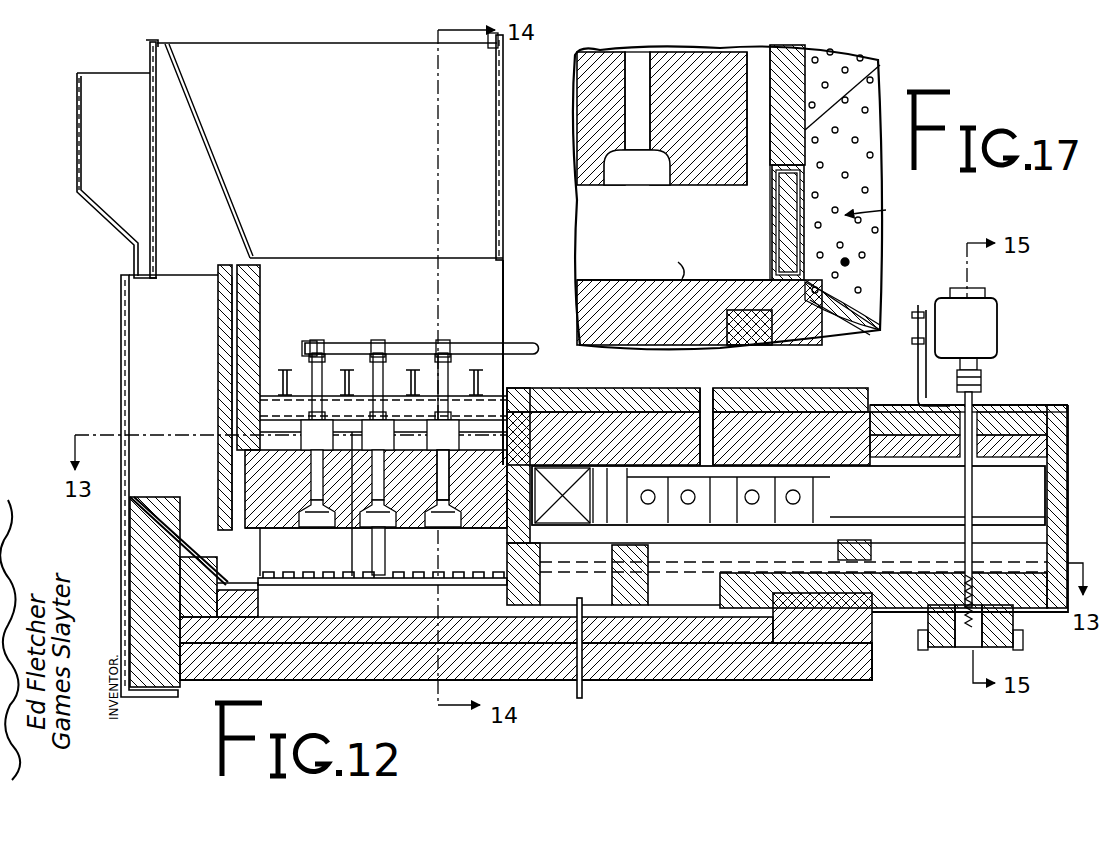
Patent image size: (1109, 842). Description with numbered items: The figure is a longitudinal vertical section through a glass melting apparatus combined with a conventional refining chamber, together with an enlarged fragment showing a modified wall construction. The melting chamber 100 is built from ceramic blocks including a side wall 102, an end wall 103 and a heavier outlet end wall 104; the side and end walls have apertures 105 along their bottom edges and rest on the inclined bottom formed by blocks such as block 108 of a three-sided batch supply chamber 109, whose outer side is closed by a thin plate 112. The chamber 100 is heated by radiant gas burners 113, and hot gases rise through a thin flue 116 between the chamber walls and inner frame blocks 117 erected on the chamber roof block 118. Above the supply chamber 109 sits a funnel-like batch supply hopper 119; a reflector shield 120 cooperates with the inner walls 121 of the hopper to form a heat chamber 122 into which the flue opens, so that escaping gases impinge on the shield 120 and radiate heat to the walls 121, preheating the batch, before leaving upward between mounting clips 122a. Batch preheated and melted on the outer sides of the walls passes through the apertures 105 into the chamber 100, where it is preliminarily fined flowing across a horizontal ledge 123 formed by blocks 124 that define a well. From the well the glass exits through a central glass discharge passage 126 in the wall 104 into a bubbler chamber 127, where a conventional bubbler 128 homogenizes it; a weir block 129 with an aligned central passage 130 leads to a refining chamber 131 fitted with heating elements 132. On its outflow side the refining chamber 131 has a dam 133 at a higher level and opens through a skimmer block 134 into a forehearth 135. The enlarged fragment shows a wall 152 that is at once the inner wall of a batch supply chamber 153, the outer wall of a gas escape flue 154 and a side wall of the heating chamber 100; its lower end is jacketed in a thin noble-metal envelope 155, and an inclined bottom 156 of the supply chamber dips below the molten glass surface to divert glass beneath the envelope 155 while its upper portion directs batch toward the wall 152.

In FIG. 12, the melting chamber 100 is at (270, 546).
In FIG. 17, the melting chamber 100 is at (650, 229).
In FIG. 12, the side wall 102 is at (324, 556).
In FIG. 12, the end wall 103 is at (218, 474).
In FIG. 12, the outlet end wall 104 is at (507, 597).
In FIG. 12, the apertures 105 is at (456, 578).
In FIG. 12, the block 108 is at (180, 548).
In FIG. 12, the batch supply chamber 109 is at (176, 375).
In FIG. 12, the thin plate 112 is at (129, 356).
In FIG. 12, the radiant gas burners 113 is at (448, 530).
In FIG. 12, the flue 116 is at (236, 296).
In FIG. 12, the inner frame blocks 117 is at (261, 318).
In FIG. 12, the chamber roof block 118 is at (495, 445).
In FIG. 12, the batch supply hopper 119 is at (110, 131).
In FIG. 12, the reflector shield 120 is at (216, 163).
In FIG. 12, the inner walls 121 is at (157, 112).
In FIG. 12, the heat chamber 122 is at (188, 212).
In FIG. 12, the mounting clips 122a is at (146, 41).
In FIG. 12, the horizontal ledge 123 is at (382, 578).
In FIG. 12, the blocks 124 is at (262, 608).
In FIG. 12, the glass discharge passage 126 is at (540, 608).
In FIG. 12, the bubbler chamber 127 is at (595, 592).
In FIG. 12, the bubbler 128 is at (582, 690).
In FIG. 12, the weir block 129 is at (647, 558).
In FIG. 12, the central passage 130 is at (646, 594).
In FIG. 12, the refining chamber 131 is at (706, 552).
In FIG. 12, the heating elements 132 is at (800, 490).
In FIG. 12, the dam 133 is at (728, 580).
In FIG. 12, the skimmer block 134 is at (854, 519).
In FIG. 12, the forehearth 135 is at (905, 548).
In FIG. 17, the wall 152 is at (812, 130).
In FIG. 17, the batch supply chamber 153 is at (850, 78).
In FIG. 17, the gas escape flue 154 is at (763, 62).
In FIG. 17, the envelope 155 is at (771, 232).
In FIG. 17, the inclined bottom 156 is at (848, 260).